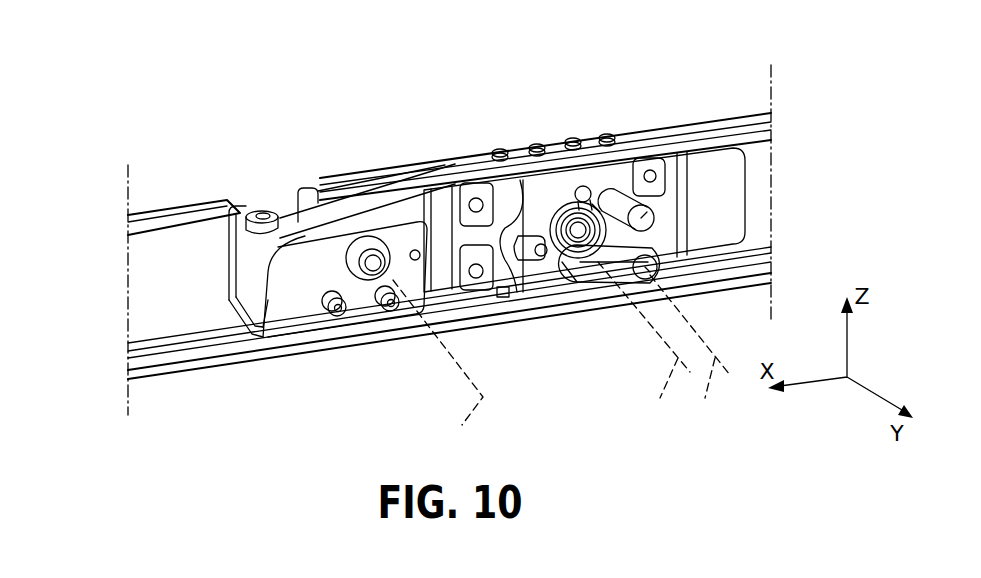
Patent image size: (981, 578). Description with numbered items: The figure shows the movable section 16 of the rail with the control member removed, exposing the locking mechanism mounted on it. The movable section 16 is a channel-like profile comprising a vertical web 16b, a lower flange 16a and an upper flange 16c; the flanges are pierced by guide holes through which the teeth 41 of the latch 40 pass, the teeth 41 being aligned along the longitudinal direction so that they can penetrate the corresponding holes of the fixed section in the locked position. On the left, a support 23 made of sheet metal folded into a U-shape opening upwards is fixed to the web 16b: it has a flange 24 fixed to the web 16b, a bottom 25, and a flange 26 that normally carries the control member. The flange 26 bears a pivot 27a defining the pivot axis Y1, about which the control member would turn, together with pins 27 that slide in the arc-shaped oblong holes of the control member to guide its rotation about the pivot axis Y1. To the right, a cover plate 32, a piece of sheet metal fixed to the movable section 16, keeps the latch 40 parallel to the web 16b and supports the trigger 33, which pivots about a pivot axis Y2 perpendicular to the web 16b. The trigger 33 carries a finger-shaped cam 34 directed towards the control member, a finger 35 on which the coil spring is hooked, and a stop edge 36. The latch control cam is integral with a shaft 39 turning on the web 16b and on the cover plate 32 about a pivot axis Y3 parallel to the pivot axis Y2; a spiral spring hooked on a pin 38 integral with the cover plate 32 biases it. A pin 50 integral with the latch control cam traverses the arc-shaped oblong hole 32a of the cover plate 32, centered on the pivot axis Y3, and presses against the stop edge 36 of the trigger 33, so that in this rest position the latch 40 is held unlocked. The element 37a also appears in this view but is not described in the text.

The movable section 16 is at (148, 271).
The lower flange 16a is at (150, 365).
The vertical web 16b is at (170, 313).
The upper flange 16c is at (178, 224).
The support 23 is at (353, 208).
The flange 24 is at (327, 218).
The bottom 25 is at (243, 332).
The flange 26 is at (295, 256).
The pins 27 is at (390, 312).
The pivot 27a is at (375, 262).
The cover plate 32 is at (760, 140).
The oblong hole 32a is at (606, 198).
The trigger 33 is at (660, 234).
The cam 34 is at (590, 266).
The finger 35 is at (652, 218).
The stop edge 36 is at (613, 205).
The curved flange 37a is at (512, 262).
The pin 38 is at (541, 262).
The shaft 39 is at (567, 264).
The latch 40 is at (544, 98).
The teeth 41 is at (536, 144).
The pin 50 is at (603, 185).
The pivot axis Y1 is at (438, 370).
The pivot axis Y2 is at (690, 350).
The pivot axis Y3 is at (644, 344).